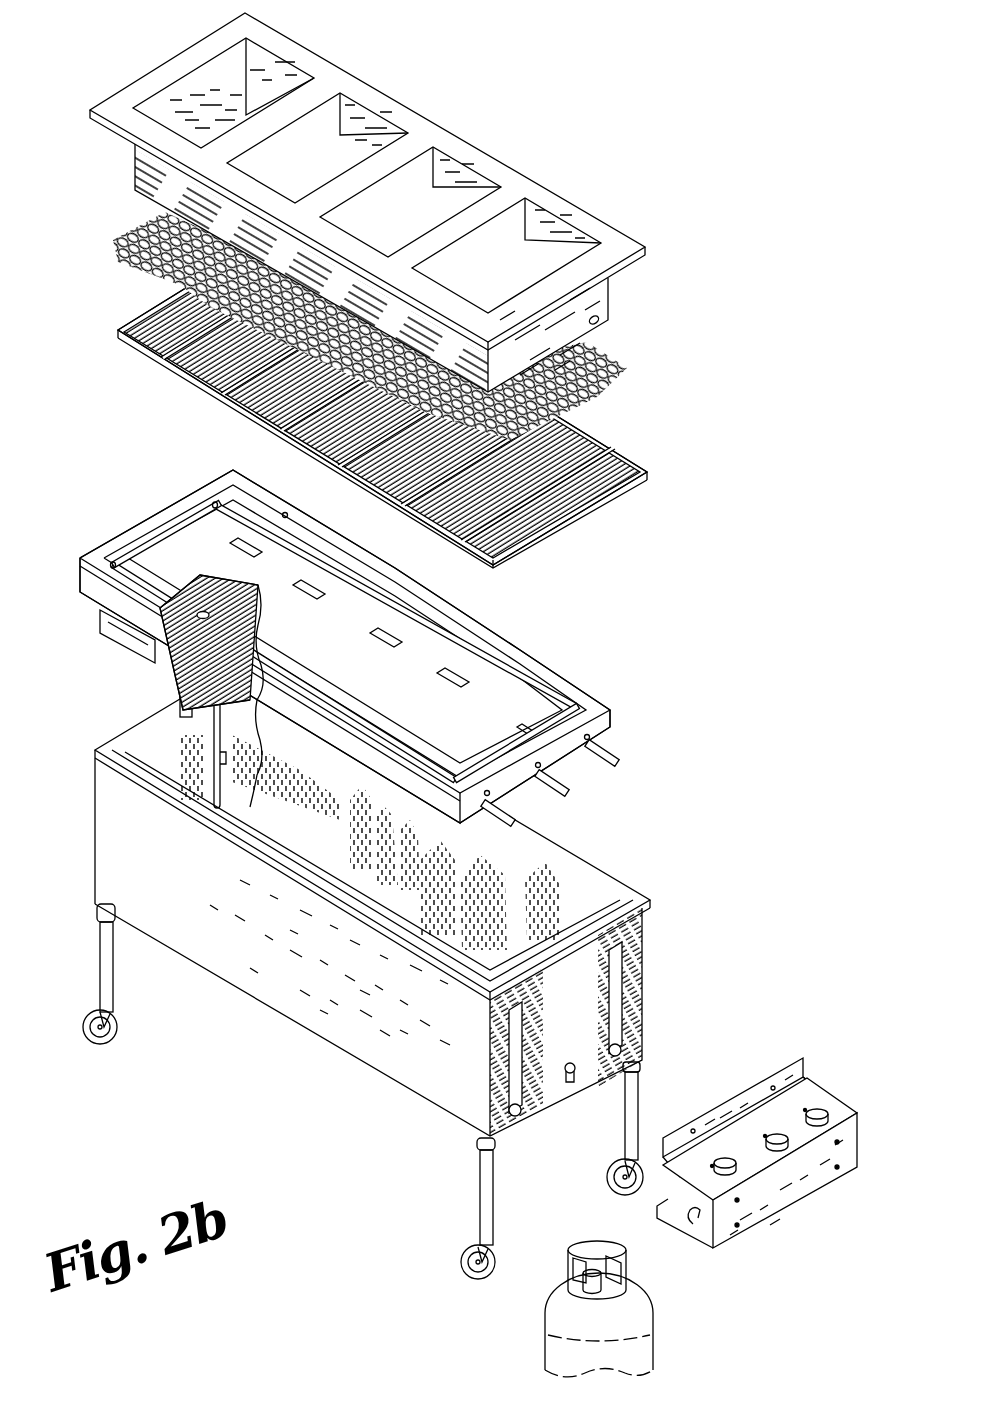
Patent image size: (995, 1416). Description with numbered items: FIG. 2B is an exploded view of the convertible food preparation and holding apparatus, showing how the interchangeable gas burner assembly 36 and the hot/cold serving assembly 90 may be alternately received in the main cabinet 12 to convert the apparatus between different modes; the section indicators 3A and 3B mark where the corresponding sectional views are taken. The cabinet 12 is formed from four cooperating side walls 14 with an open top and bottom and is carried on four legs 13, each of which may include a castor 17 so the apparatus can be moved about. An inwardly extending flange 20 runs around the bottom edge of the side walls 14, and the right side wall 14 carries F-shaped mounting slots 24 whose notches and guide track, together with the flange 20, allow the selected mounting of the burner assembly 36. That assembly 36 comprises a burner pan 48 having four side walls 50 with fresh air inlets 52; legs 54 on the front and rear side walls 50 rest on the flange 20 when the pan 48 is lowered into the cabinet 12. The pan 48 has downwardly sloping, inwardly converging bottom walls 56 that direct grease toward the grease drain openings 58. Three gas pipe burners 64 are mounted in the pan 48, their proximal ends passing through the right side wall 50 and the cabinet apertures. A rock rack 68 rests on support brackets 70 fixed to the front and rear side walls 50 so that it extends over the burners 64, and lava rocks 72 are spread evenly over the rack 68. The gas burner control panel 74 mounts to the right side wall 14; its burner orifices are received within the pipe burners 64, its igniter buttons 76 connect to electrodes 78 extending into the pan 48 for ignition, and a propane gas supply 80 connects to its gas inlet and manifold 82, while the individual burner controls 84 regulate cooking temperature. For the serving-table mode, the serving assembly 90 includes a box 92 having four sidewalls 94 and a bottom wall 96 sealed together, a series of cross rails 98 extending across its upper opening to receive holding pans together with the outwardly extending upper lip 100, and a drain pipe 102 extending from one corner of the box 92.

The main cabinet 12 is at (436, 969).
The legs 13 is at (482, 1193).
The side walls 14 is at (402, 969).
The castor 17 is at (462, 1263).
The inwardly extending flange 20 is at (487, 962).
The F-shaped mounting slots 24 is at (645, 977).
The gas burner assembly 36 is at (361, 676).
The burner pan 48 is at (528, 812).
The side walls 50 is at (107, 552).
The fresh air inlets 52 is at (258, 713).
The legs 54 is at (150, 638).
The bottom walls 56 is at (252, 675).
The grease drain openings 58 is at (258, 660).
The gas pipe burners 64 is at (337, 669).
The rock rack 68 is at (383, 432).
The support brackets 70 is at (583, 694).
The lava rocks 72 is at (614, 482).
The gas burner control panel 74 is at (740, 1151).
The igniter buttons 76 is at (662, 1198).
The electrodes 78 is at (590, 740).
The propane gas supply 80 is at (645, 1346).
The gas inlet and manifold 82 is at (693, 1222).
The burner controls 84 is at (732, 1175).
The hot/cold serving assembly 90 is at (423, 319).
The box 92 is at (404, 221).
The sidewalls 94 is at (262, 78).
The bottom wall 96 is at (394, 231).
The cross rails 98 is at (223, 147).
The outwardly extending upper lip 100 is at (618, 239).
The drain pipe 102 is at (600, 322).
The section 3A is at (617, 1144).
The section 3B is at (579, 1100).